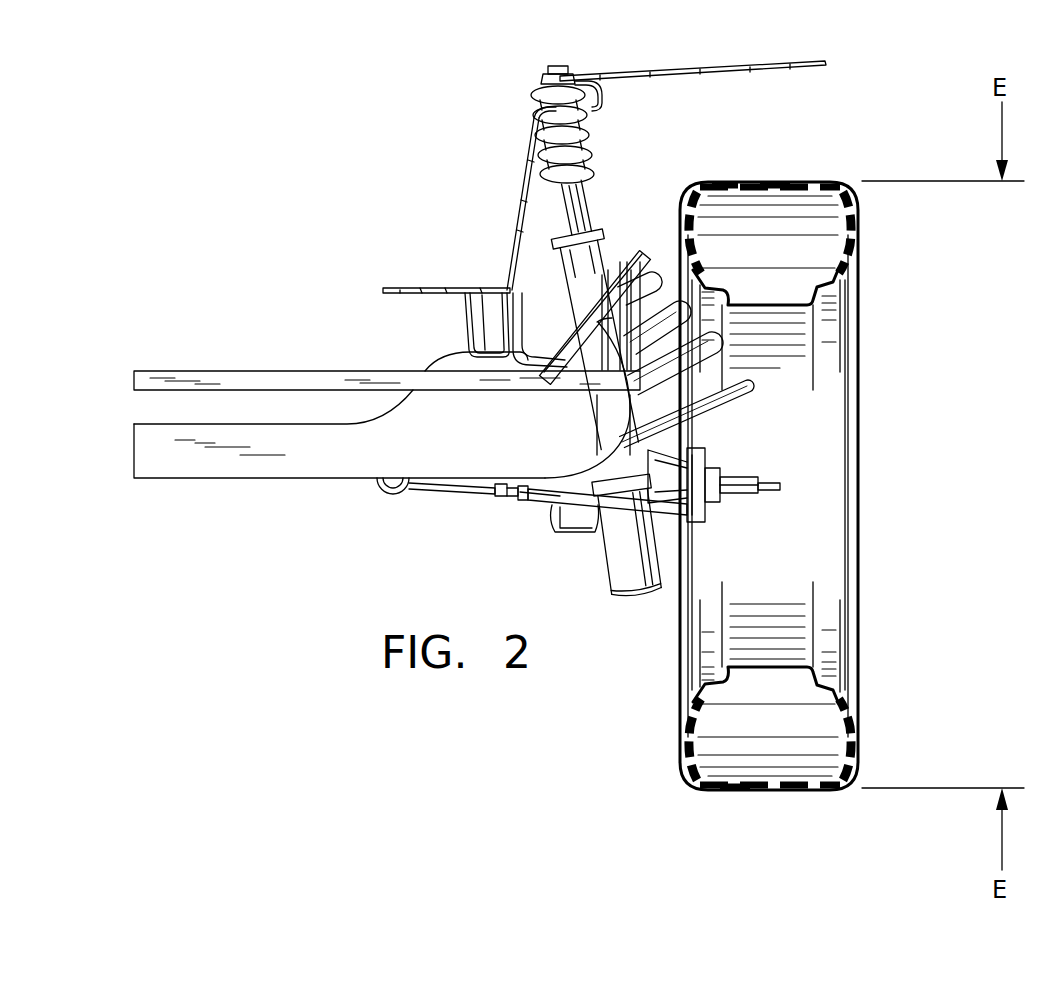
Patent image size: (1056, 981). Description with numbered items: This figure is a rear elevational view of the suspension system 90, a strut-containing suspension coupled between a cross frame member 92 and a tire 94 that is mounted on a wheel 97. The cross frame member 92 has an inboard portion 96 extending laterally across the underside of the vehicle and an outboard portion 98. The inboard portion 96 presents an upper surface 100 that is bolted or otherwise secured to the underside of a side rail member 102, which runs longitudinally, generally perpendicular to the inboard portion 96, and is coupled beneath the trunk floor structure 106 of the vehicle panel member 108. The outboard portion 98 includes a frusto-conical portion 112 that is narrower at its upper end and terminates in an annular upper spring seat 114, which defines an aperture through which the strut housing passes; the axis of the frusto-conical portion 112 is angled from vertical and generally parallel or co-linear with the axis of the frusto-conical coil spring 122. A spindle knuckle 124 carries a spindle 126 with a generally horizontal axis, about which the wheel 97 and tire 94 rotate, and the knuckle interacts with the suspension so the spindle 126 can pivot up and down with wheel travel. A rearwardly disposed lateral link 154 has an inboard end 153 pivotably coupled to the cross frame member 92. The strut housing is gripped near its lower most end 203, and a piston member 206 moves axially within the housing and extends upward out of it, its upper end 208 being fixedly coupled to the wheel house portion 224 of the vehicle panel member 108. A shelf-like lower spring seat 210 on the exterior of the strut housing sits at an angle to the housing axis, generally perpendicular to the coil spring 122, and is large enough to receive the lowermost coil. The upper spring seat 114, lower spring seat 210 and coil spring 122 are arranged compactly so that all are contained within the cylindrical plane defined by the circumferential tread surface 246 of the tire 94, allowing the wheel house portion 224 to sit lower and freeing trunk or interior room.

The suspension system 90 is at (680, 178).
The cross frame member 92 is at (232, 505).
The tire 94 is at (838, 486).
The inboard portion 96 is at (335, 482).
The wheel 97 is at (830, 312).
The outboard portion 98 is at (548, 320).
The upper surface 100 is at (446, 360).
The side rail member 102 is at (462, 327).
The trunk floor structure 106 is at (468, 300).
The vehicle panel member 108 is at (500, 156).
The frusto-conical portion 112 is at (583, 388).
The annular upper spring seat 114 is at (638, 258).
The frusto-conical coil spring 122 is at (760, 372).
The spindle knuckle 124 is at (712, 510).
The spindle 126 is at (785, 466).
The inboard end 153 is at (392, 498).
The lateral link 154 is at (470, 500).
The lower most end 203 is at (640, 600).
The piston member 206 is at (592, 212).
The upper end 208 is at (548, 66).
The lower spring seat 210 is at (745, 398).
The wheel house portion 224 is at (733, 62).
The circumferential tread surface 246 is at (770, 184).